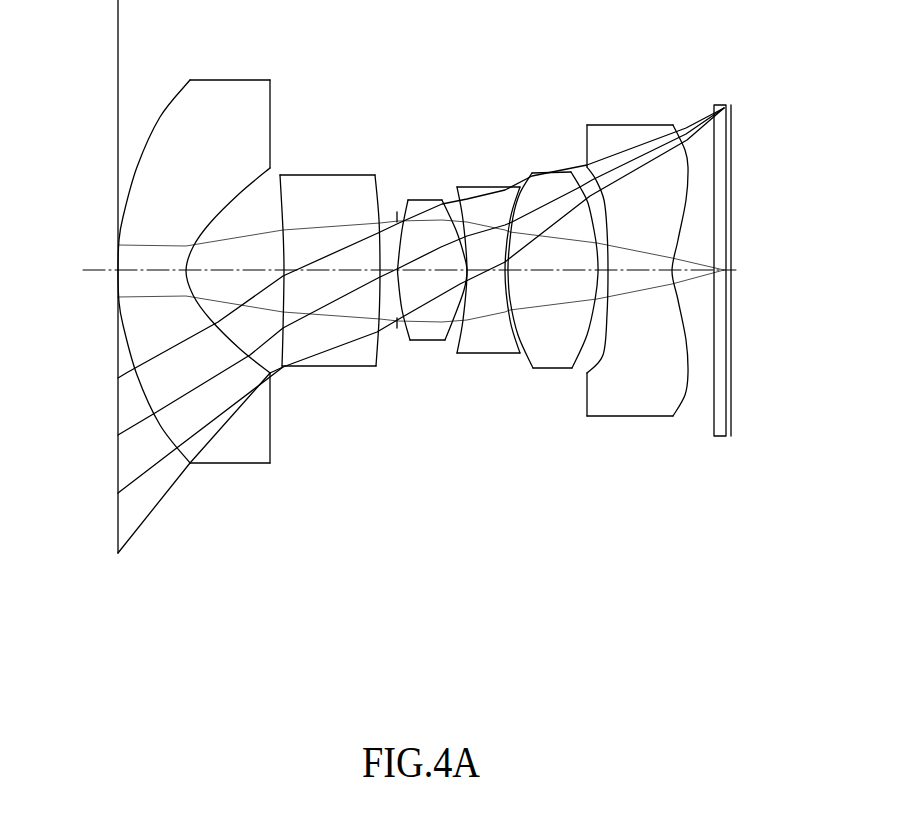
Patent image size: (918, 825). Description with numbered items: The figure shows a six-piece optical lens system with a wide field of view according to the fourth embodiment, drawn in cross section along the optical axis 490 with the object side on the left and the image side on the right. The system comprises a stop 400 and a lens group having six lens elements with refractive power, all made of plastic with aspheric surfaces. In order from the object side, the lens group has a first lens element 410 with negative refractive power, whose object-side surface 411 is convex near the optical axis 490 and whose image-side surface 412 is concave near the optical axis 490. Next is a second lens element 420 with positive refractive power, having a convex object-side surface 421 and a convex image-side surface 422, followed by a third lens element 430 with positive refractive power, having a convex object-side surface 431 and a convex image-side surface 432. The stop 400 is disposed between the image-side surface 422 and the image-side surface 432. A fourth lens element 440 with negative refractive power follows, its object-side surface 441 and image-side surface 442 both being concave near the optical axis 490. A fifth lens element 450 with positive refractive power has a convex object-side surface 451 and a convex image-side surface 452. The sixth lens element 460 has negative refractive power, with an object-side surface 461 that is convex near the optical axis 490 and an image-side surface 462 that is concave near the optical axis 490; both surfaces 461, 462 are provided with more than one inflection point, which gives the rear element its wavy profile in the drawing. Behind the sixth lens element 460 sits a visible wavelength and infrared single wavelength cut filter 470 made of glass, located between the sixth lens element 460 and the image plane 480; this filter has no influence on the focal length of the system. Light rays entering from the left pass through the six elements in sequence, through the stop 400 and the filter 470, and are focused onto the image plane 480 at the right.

The stop 400 is at (394, 216).
The first lens element 410 is at (177, 283).
The object-side surface of the first lens element 411 is at (138, 383).
The image-side surface of the first lens element 412 is at (271, 430).
The second lens element 420 is at (333, 259).
The object-side surface of the second lens element 421 is at (284, 348).
The image-side surface of the second lens element 422 is at (378, 340).
The third lens element 430 is at (424, 271).
The object-side surface of the third lens element 431 is at (404, 330).
The image-side surface of the third lens element 432 is at (452, 330).
The fourth lens element 440 is at (492, 267).
The object-side surface of the fourth lens element 441 is at (463, 330).
The image-side surface of the fourth lens element 442 is at (512, 330).
The fifth lens element 450 is at (553, 282).
The object-side surface of the fifth lens element 451 is at (520, 337).
The image-side surface of the fifth lens element 452 is at (578, 350).
The sixth lens element 460 is at (641, 274).
The object-side surface of the sixth lens element 461 is at (603, 356).
The image-side surface of the sixth lens element 462 is at (687, 388).
The visible wavelength and infrared single wavelength cut filter 470 is at (718, 102).
The image plane 480 is at (732, 377).
The optical axis 490 is at (95, 268).